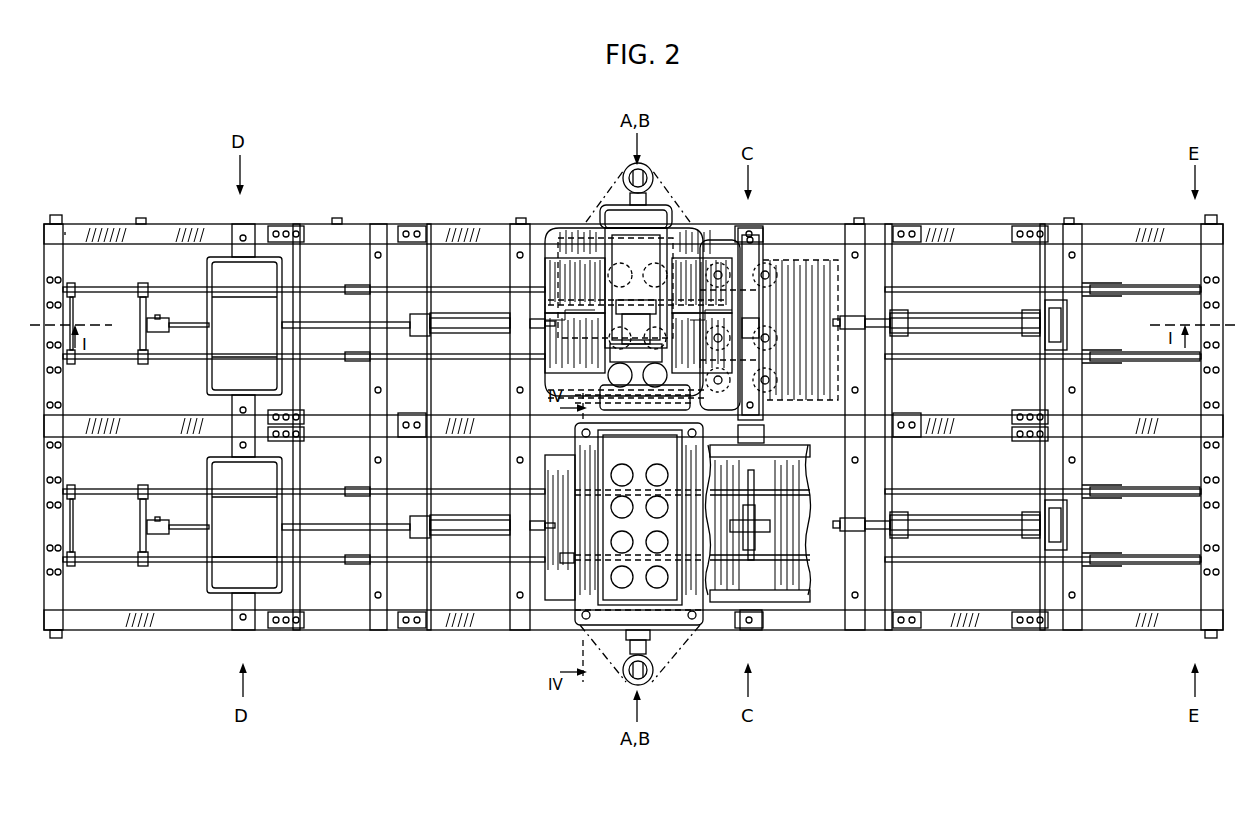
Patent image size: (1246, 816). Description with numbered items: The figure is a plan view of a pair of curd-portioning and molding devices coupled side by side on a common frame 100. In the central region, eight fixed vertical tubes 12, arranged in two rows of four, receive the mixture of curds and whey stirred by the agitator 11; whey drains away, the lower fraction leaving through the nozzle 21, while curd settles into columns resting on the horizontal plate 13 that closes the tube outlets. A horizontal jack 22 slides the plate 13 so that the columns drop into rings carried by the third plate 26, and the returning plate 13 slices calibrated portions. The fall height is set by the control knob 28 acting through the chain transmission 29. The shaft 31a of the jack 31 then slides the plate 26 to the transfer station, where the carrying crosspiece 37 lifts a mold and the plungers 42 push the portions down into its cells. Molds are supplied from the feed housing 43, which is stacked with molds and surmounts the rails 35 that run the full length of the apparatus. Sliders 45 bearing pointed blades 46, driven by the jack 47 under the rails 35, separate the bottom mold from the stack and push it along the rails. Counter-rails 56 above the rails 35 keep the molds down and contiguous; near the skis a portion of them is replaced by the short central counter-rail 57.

The frame 100 is at (958, 224).
The agitator 11 is at (630, 388).
The fixed vertical tubes 12 is at (651, 462).
The horizontal plate 13 is at (562, 470).
The nozzle 21 is at (572, 562).
The horizontal jack 22 is at (398, 318).
The third plate 26 is at (830, 333).
The control knob 28 is at (654, 173).
The chain transmission 29 is at (590, 215).
The jack 31 is at (930, 320).
The shaft 31a is at (878, 518).
The rails 35 is at (1162, 292).
The carrying crosspiece 37 is at (770, 540).
The plungers 42 is at (814, 300).
The feed housing 43 is at (208, 274).
The sliders 45 is at (148, 296).
The pointed blades 46 is at (108, 294).
The jack 47 is at (460, 314).
The counter-rails 56 is at (1008, 290).
The central counter-rail 57 is at (358, 300).